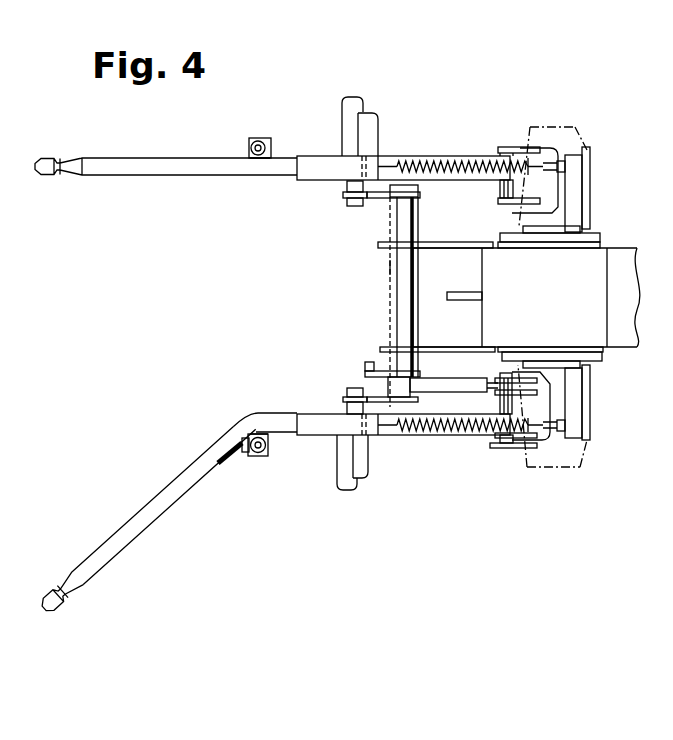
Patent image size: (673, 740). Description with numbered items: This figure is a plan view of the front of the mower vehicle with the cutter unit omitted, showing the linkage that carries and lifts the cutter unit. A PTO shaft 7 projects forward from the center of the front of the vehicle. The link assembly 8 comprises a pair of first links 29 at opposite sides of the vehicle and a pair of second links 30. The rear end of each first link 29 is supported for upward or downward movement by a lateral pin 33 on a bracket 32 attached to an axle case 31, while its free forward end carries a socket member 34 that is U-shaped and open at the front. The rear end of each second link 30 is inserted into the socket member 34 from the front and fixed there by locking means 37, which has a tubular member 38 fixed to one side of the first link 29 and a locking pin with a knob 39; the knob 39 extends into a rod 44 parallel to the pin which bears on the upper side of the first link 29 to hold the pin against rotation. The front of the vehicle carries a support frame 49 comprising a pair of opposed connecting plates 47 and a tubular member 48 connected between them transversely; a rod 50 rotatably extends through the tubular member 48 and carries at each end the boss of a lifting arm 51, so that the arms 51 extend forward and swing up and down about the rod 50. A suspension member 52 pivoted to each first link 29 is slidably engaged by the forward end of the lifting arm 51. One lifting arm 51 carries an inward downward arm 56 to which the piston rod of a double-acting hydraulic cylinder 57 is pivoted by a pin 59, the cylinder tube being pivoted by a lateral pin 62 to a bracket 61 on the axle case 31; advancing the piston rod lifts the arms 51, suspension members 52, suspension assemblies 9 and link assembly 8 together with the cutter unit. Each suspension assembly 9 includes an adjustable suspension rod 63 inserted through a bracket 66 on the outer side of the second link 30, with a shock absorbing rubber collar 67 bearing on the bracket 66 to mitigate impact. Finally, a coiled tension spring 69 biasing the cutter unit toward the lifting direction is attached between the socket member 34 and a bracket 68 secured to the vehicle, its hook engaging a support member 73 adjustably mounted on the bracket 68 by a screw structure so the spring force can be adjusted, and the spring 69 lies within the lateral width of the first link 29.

The PTO shaft 7 is at (470, 293).
The link assembly 8 is at (166, 364).
The suspension assembly 9 is at (244, 157).
The first link 29 is at (459, 158).
The second link 30 is at (168, 168).
The axle case 31 is at (578, 460).
The bracket 32 is at (532, 125).
The lateral pin 33 is at (508, 150).
The socket member 34 is at (308, 164).
The locking means 37 is at (370, 302).
The tubular member 38 is at (342, 131).
The knob 39 is at (355, 102).
The rod 44 is at (382, 120).
The connecting plate 47 is at (441, 244).
The tubular member 48 is at (394, 295).
The support frame 49 is at (392, 266).
The rod 50 is at (392, 330).
The lifting arm 51 is at (386, 199).
The suspension member 52 is at (345, 193).
The downward arm 56 is at (363, 366).
The double-acting hydraulic cylinder 57 is at (446, 375).
The pin 59 is at (364, 373).
The bracket 61 is at (502, 376).
The lateral pin 62 is at (525, 378).
The suspension rod 63 is at (266, 146).
The bracket 66 is at (258, 137).
The shock absorbing rubber collar 67 is at (250, 458).
The bracket 68 is at (577, 183).
The spring 69 is at (486, 162).
The support member 73 is at (572, 160).